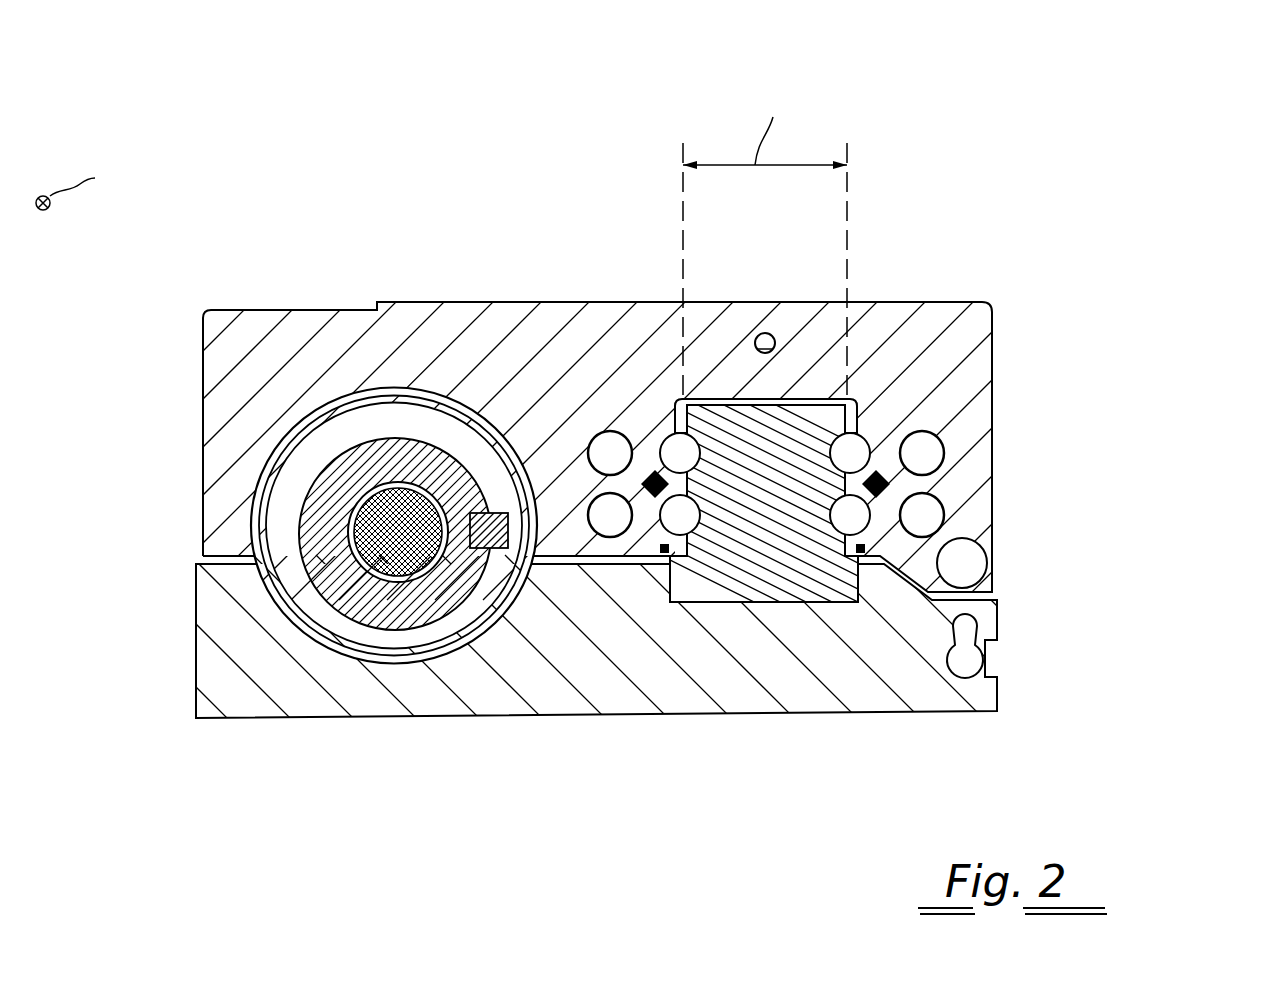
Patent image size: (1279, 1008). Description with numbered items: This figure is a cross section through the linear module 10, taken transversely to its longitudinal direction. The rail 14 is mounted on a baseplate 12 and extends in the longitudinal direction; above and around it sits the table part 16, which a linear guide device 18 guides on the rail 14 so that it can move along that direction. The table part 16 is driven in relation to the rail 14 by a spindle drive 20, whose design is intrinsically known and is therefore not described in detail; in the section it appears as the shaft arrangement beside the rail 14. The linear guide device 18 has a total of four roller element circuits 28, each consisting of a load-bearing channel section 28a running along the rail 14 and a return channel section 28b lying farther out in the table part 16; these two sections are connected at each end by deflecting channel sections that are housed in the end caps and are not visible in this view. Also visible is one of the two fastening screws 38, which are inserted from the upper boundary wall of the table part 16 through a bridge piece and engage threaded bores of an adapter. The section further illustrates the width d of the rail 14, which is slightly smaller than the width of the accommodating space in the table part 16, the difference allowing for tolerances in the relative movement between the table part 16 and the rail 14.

The linear module 10 is at (1175, 140).
The baseplate 12 is at (990, 693).
The rail 14 is at (760, 583).
The table part 16 is at (215, 370).
The linear guide device 18 is at (1017, 472).
The spindle drive 20 is at (260, 615).
The roller element circuits 28 is at (861, 386).
The load-bearing channel section 28a is at (862, 402).
The return channel section 28b is at (955, 430).
The fastening screws 38 is at (770, 332).